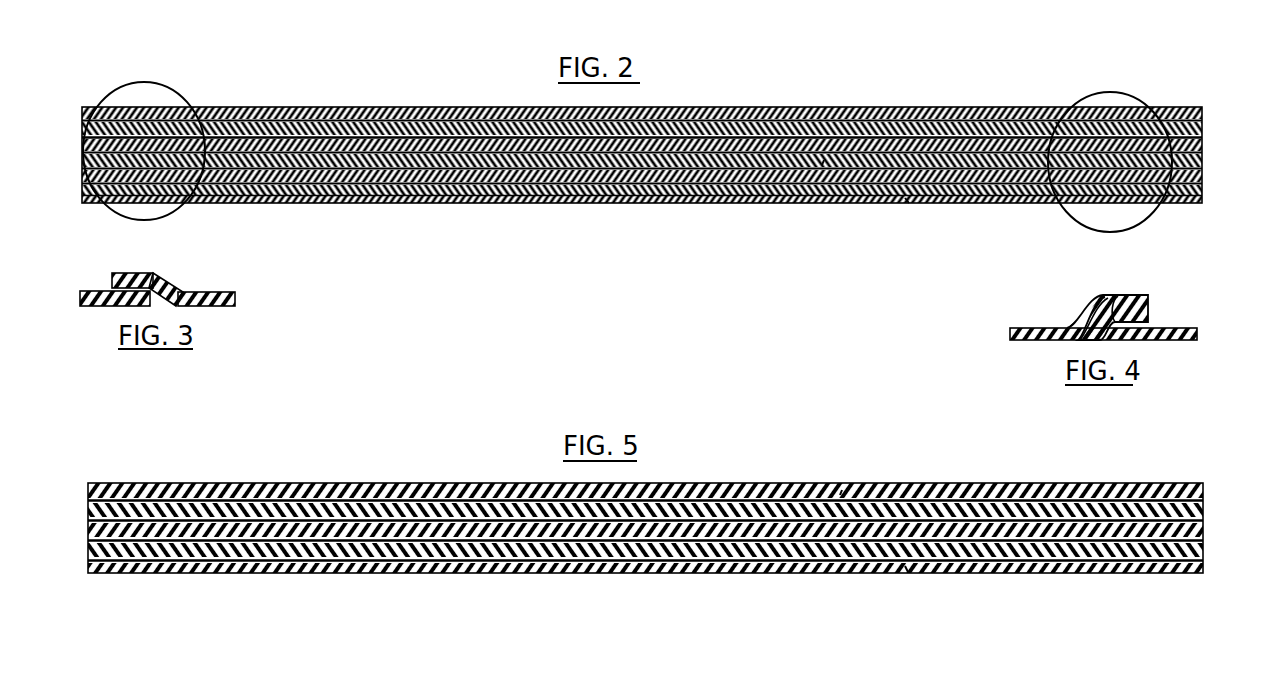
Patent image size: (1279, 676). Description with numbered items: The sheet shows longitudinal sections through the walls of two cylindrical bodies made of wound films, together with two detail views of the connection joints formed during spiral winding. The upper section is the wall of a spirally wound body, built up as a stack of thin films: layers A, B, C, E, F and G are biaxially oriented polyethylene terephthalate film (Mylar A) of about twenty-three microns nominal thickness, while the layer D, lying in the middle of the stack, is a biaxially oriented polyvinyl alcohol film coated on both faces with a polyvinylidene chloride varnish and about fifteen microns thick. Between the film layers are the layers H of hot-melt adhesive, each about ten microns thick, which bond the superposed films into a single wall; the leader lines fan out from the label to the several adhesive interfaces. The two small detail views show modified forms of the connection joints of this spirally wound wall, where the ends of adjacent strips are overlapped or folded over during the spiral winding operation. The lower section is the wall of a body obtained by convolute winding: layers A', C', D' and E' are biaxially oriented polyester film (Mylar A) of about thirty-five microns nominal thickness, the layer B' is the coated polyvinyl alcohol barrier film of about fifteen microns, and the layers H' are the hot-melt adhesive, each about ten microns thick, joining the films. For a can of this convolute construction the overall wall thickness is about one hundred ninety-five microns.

In FIG. 2, the layer of element (b) A is at (664, 77).
In FIG. 2, the layer of element (b) B is at (664, 104).
In FIG. 2, the layer of element (b) C is at (664, 130).
In FIG. 2, the layer of element (a) D is at (665, 156).
In FIG. 2, the layer of element (b) E is at (664, 187).
In FIG. 2, the layer of element (b) F is at (1195, 187).
In FIG. 2, the layer of element (b) G is at (1190, 198).
In FIG. 2, the layers of element (c) H is at (846, 201).
In FIG. 5, the layer of element (b) A' is at (672, 460).
In FIG. 5, the layer of element (a) B' is at (672, 494).
In FIG. 5, the layer of element (b) C' is at (672, 526).
In FIG. 5, the layer of element (b) D' is at (673, 562).
In FIG. 5, the layer of element (b) E' is at (671, 593).
In FIG. 5, the layers of element (c) H' is at (845, 573).